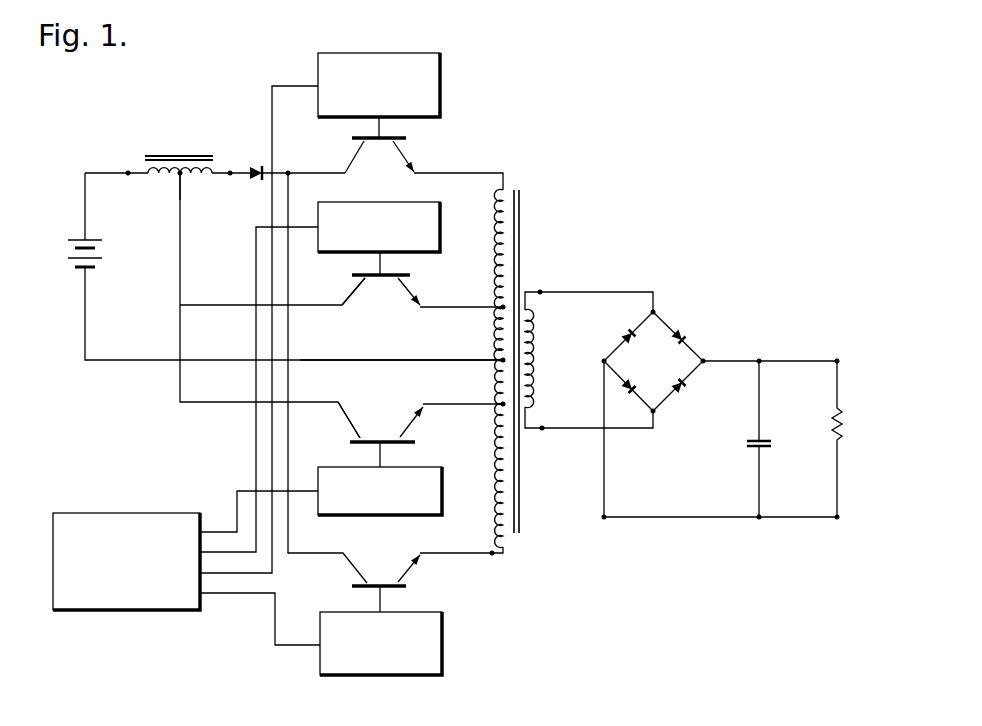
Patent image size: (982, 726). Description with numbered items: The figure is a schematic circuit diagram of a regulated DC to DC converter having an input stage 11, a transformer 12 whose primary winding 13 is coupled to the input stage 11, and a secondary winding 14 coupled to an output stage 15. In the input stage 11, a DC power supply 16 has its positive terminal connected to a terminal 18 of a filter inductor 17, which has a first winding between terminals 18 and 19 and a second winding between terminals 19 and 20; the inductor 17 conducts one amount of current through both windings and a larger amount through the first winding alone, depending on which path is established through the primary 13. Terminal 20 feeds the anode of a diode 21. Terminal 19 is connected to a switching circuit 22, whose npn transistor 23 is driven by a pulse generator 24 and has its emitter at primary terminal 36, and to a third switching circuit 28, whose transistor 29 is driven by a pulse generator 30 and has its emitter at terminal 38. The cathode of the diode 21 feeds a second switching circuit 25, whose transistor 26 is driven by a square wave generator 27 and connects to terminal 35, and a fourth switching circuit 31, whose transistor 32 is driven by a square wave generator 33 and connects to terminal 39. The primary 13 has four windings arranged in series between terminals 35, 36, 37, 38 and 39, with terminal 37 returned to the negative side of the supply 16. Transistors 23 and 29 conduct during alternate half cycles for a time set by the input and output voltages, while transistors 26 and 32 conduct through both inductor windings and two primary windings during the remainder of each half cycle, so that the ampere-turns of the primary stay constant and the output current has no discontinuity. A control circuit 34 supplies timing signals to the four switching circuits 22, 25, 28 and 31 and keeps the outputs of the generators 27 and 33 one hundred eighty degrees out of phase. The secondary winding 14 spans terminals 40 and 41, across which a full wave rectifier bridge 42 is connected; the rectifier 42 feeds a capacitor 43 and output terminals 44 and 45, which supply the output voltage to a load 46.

The input stage 11 is at (267, 85).
The transformer 12 is at (519, 367).
The primary winding 13 is at (503, 205).
The secondary winding 14 is at (530, 340).
The output stage 15 is at (741, 431).
The DC power supply 16 is at (68, 262).
The filter inductor 17 is at (190, 142).
The terminal 18 is at (127, 172).
The terminal 19 is at (178, 178).
The terminal 20 is at (231, 172).
The diode 21 is at (251, 178).
The switching circuit 22 is at (392, 278).
The npn transistor 23 is at (353, 272).
The pulse generator 24 is at (408, 204).
The second switching circuit 25 is at (392, 145).
The npn transistor 26 is at (355, 136).
The square wave generator 27 is at (440, 66).
The third switching circuit 28 is at (387, 434).
The npn transistor 29 is at (352, 443).
The pulse generator 30 is at (442, 515).
The fourth switching circuit 31 is at (347, 597).
The npn transistor 32 is at (377, 583).
The square wave generator 33 is at (442, 675).
The control circuit 34 is at (63, 602).
The terminal 35 is at (490, 173).
The terminal 36 is at (502, 307).
The terminal 37 is at (502, 360).
The terminal 38 is at (502, 404).
The terminal 39 is at (492, 555).
The terminal 40 is at (541, 292).
The terminal 41 is at (542, 428).
The full wave rectifier bridge 42 is at (667, 370).
The capacitor 43 is at (755, 447).
The output terminal 44 is at (837, 361).
The output terminal 45 is at (837, 520).
The load 46 is at (838, 422).